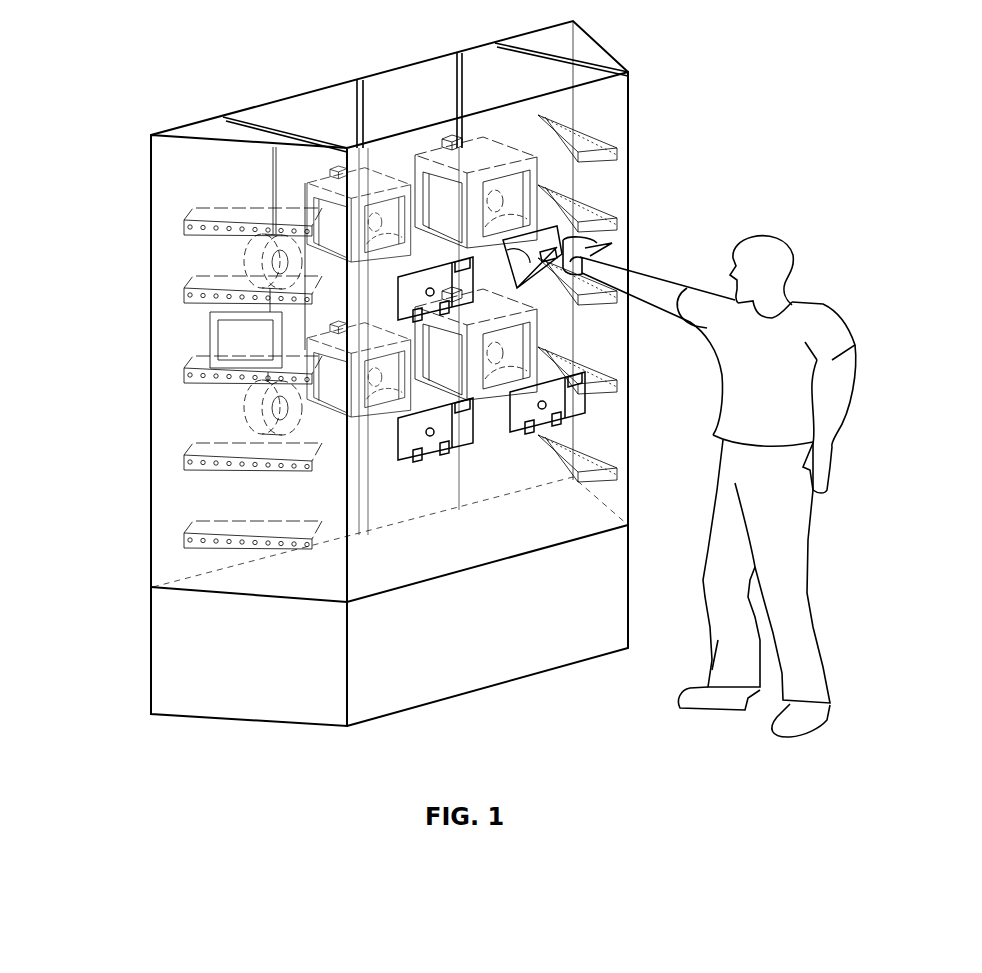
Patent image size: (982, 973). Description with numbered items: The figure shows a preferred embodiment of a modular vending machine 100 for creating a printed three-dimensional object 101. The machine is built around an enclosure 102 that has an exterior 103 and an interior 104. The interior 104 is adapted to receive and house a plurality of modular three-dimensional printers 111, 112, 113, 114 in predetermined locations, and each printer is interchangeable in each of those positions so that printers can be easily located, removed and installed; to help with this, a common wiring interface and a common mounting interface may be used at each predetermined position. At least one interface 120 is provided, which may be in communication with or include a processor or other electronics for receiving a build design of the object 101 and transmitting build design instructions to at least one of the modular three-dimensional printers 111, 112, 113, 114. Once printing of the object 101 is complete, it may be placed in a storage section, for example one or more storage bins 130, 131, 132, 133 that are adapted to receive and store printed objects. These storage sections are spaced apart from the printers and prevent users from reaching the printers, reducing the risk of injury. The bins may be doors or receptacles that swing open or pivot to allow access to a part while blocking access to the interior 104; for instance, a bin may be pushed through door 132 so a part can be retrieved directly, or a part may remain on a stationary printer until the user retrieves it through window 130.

The modular vending machine 100 is at (320, 62).
The printed three-dimensional object 101 is at (557, 235).
The enclosure 102 is at (151, 190).
The exterior 103 is at (200, 625).
The interior 104 is at (405, 440).
The modular three-dimensional printer 111 is at (490, 157).
The modular three-dimensional printer 112 is at (500, 303).
The modular three-dimensional printer 113 is at (325, 423).
The modular three-dimensional printer 114 is at (330, 195).
The interface 120 is at (467, 433).
The storage bin 130 is at (580, 405).
The storage bin 131 is at (222, 578).
The storage bin 132 is at (555, 225).
The storage bin 133 is at (407, 297).